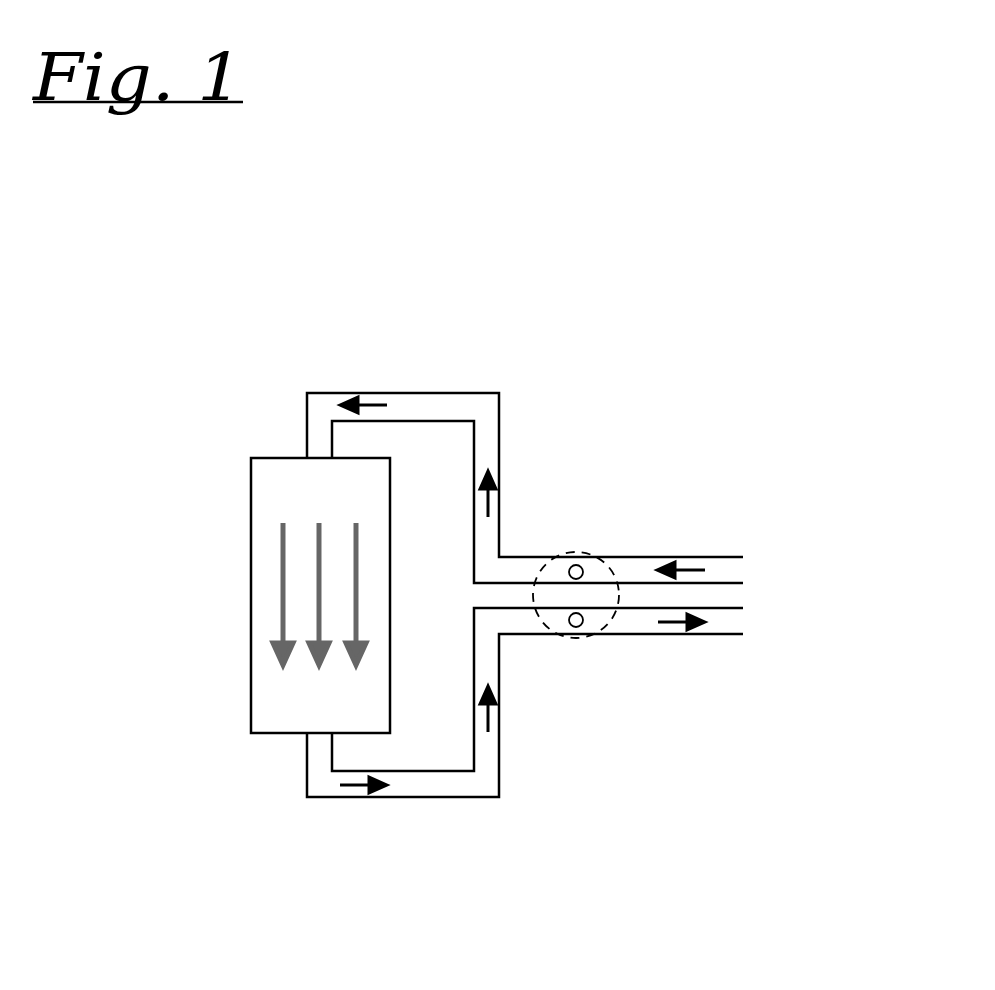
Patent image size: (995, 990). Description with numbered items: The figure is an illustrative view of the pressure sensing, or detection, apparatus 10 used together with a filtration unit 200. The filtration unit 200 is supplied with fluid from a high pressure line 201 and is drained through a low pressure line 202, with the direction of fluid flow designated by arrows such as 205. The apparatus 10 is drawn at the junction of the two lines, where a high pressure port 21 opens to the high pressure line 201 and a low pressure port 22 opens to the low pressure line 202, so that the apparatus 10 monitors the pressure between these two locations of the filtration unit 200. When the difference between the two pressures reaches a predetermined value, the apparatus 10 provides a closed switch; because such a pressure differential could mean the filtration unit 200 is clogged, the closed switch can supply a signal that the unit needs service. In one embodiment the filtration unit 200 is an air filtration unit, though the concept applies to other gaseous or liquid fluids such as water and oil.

The pressure sensing apparatus 10 is at (612, 633).
The high pressure port 21 is at (578, 558).
The low pressure port 22 is at (576, 627).
The filtration unit 200 is at (262, 607).
The high pressure line 201 is at (425, 405).
The low pressure line 202 is at (410, 783).
The fluid flow direction arrow 205 is at (358, 785).